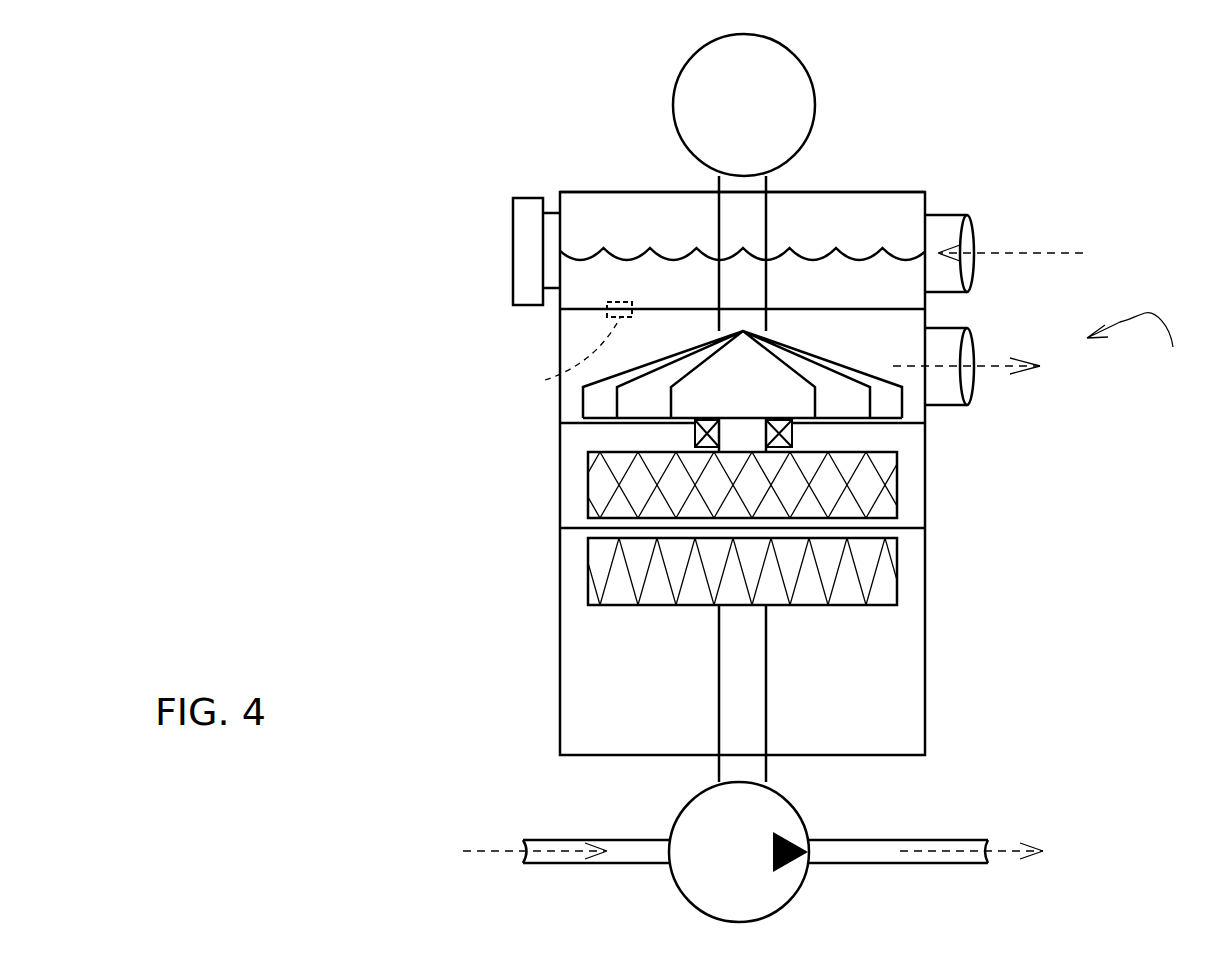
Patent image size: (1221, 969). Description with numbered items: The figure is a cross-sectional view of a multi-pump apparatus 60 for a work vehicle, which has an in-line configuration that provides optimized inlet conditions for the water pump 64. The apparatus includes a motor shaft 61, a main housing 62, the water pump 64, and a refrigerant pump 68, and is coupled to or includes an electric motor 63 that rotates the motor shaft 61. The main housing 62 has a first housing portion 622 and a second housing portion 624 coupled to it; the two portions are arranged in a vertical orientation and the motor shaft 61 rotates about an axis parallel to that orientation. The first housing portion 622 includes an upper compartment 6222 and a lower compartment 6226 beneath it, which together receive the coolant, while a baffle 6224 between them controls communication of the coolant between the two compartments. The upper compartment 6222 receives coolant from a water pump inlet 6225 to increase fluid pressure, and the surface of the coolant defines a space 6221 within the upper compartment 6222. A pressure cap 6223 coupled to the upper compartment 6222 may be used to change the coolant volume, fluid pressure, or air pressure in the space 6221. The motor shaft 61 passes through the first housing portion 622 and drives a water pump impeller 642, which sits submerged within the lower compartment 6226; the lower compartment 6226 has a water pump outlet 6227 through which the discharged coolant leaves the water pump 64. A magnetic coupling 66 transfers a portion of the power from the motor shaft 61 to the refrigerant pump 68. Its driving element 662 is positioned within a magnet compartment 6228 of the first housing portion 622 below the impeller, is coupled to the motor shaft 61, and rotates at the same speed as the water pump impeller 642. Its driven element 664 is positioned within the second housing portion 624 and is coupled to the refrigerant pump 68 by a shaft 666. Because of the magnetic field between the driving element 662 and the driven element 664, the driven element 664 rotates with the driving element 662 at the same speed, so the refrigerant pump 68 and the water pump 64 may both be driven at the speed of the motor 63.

The multi-pump apparatus 60 is at (1102, 663).
The motor shaft 61 is at (750, 215).
The main housing 62 is at (380, 335).
The motor 63 is at (788, 82).
The water pump 64 is at (1152, 339).
The magnetic coupling 66 is at (903, 452).
The refrigerant pump 68 is at (735, 888).
The first housing portion 622 is at (488, 193).
The second housing portion 624 is at (550, 528).
The water pump impeller 642 is at (717, 395).
The driving element 662 is at (617, 490).
The driven element 664 is at (617, 588).
The shaft 666 is at (735, 703).
The space 6221 is at (658, 203).
The upper compartment 6222 is at (583, 213).
The pressure cap 6223 is at (525, 207).
The baffle 6224 is at (550, 358).
The water pump inlet 6225 is at (952, 210).
The lower compartment 6226 is at (580, 330).
The water pump outlet 6227 is at (950, 388).
The magnet compartment 6228 is at (910, 437).